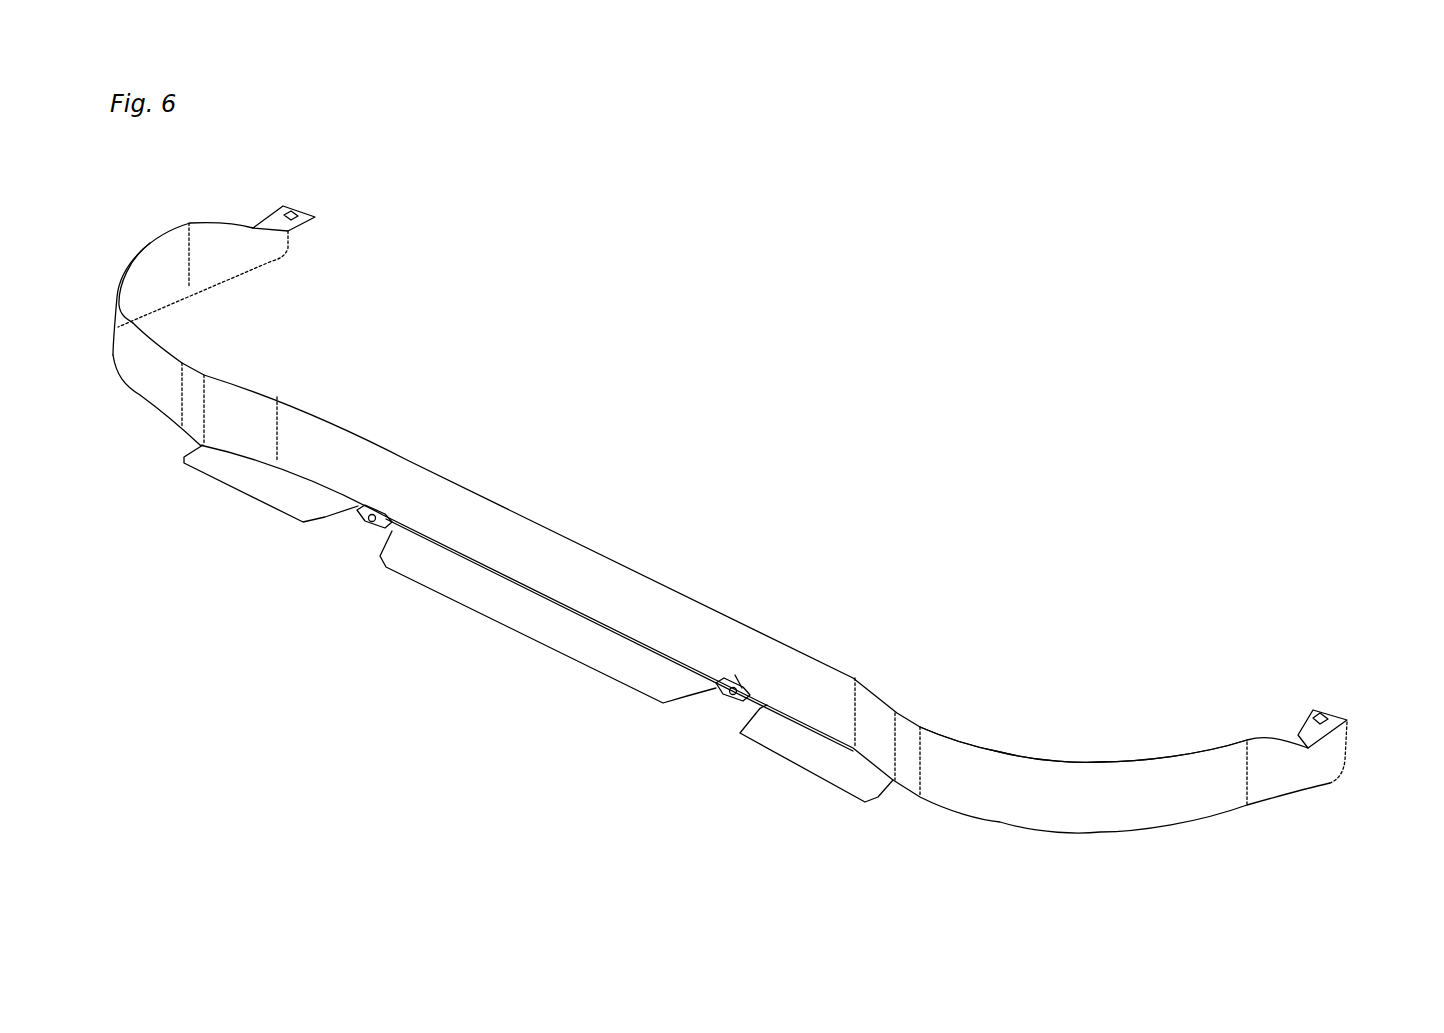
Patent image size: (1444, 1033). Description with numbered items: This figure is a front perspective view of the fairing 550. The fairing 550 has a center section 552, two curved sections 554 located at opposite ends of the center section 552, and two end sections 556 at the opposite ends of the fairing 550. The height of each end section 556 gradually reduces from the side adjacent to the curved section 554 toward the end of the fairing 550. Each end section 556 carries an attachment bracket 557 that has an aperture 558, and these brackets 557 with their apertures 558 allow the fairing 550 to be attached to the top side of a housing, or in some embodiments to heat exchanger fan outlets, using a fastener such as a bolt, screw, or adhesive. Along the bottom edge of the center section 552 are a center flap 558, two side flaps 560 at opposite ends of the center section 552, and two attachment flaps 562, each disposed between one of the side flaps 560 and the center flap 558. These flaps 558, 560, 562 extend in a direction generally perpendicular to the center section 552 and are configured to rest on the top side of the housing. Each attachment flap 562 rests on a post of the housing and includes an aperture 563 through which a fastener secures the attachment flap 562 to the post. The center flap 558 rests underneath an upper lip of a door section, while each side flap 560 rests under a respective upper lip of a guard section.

The fairing 550 is at (718, 448).
The center section 552 is at (537, 520).
The curved section 554 is at (128, 313).
The end section 556 is at (218, 222).
The attachment bracket 557 is at (310, 212).
The center flap / aperture 558 is at (288, 214).
The side flap 560 is at (240, 499).
The attachment flap 562 is at (375, 530).
The aperture 563 is at (357, 522).